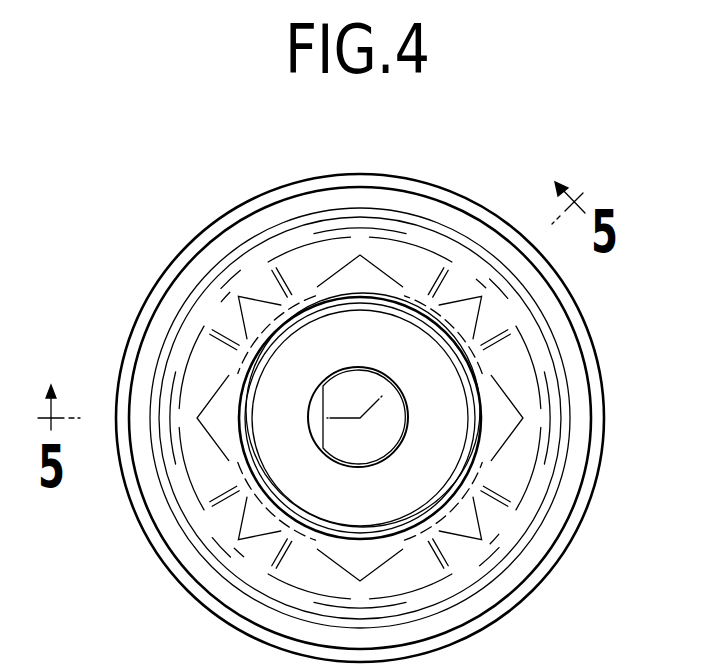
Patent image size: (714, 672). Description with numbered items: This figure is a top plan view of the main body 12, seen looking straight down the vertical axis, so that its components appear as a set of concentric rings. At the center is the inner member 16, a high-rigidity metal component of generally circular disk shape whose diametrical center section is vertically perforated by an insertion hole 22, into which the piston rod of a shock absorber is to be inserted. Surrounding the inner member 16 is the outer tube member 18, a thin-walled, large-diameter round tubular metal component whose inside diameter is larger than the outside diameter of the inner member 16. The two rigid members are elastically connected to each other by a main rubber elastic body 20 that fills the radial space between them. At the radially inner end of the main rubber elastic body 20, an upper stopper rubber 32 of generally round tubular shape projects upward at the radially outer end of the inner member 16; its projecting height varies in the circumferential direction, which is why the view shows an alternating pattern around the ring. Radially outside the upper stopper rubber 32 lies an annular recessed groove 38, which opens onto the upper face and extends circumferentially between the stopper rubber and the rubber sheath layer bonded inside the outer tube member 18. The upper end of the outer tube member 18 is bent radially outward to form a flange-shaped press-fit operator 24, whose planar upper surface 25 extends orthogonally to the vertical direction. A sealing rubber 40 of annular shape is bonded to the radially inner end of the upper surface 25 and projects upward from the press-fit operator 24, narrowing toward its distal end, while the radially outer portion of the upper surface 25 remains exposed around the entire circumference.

The main body 12 is at (133, 247).
The inner member 16 is at (436, 398).
The outer tube member 18 is at (524, 607).
The main rubber elastic body 20 is at (312, 519).
The insertion hole 22 is at (401, 433).
The press-fit operator 24 is at (369, 186).
The upper surface 25 is at (602, 450).
The upper stopper rubber 32 is at (420, 270).
The annular recessed groove 38 is at (181, 499).
The sealing rubber 40 is at (283, 212).